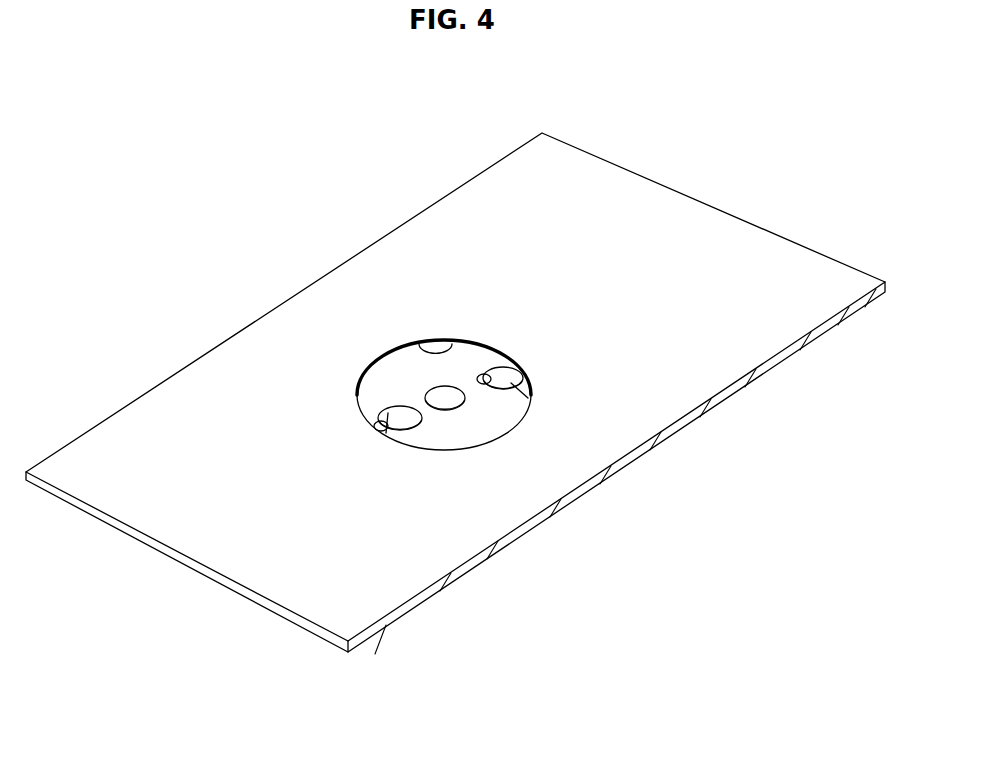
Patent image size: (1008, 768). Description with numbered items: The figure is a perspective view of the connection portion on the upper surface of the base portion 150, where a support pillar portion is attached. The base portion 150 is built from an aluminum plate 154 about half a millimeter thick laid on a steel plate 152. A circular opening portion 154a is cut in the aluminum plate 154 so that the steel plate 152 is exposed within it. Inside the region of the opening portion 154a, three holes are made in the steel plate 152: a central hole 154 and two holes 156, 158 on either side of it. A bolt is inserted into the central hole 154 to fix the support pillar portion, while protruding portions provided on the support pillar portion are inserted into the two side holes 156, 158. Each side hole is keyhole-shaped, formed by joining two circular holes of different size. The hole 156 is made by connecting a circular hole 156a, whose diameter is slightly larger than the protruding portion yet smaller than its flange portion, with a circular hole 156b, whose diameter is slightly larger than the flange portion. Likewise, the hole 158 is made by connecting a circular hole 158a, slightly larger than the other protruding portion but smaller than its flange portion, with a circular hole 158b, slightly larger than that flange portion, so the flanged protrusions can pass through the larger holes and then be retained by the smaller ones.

The base portion 150 is at (521, 113).
The steel plate 152 is at (457, 420).
The aluminum plate 154 is at (408, 343).
The circular opening portion 154a is at (455, 345).
The hole 156 is at (415, 433).
The circular hole 156a is at (380, 433).
The circular hole 156b is at (400, 413).
The hole 158 is at (520, 396).
The circular hole 158a is at (522, 415).
The circular hole 158b is at (508, 386).